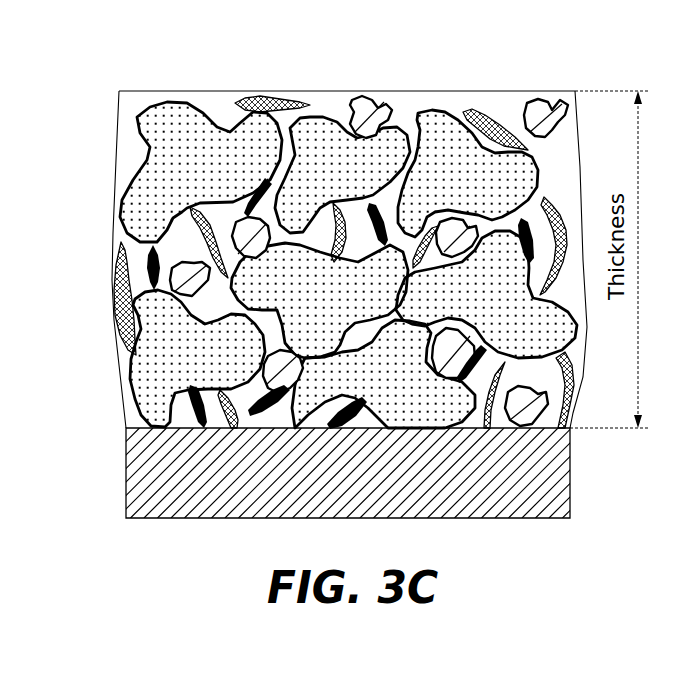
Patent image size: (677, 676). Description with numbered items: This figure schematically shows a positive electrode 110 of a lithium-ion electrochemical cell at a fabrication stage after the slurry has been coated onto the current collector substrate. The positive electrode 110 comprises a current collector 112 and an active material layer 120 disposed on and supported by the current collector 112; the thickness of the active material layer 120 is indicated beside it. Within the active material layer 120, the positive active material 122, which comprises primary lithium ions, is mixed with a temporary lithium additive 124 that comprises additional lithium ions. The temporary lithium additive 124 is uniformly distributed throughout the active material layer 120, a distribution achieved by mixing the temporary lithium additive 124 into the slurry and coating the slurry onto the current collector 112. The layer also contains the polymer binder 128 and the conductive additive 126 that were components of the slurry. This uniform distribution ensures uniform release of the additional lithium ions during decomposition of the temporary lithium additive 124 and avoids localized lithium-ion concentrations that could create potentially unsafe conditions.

The positive electrode 110 is at (108, 66).
The current collector 112 is at (130, 491).
The active material layer 120 is at (127, 137).
The positive active material 122 is at (166, 100).
The temporary lithium additive 124 is at (364, 92).
The conductive additive 126 is at (148, 257).
The polymer binder 128 is at (118, 327).